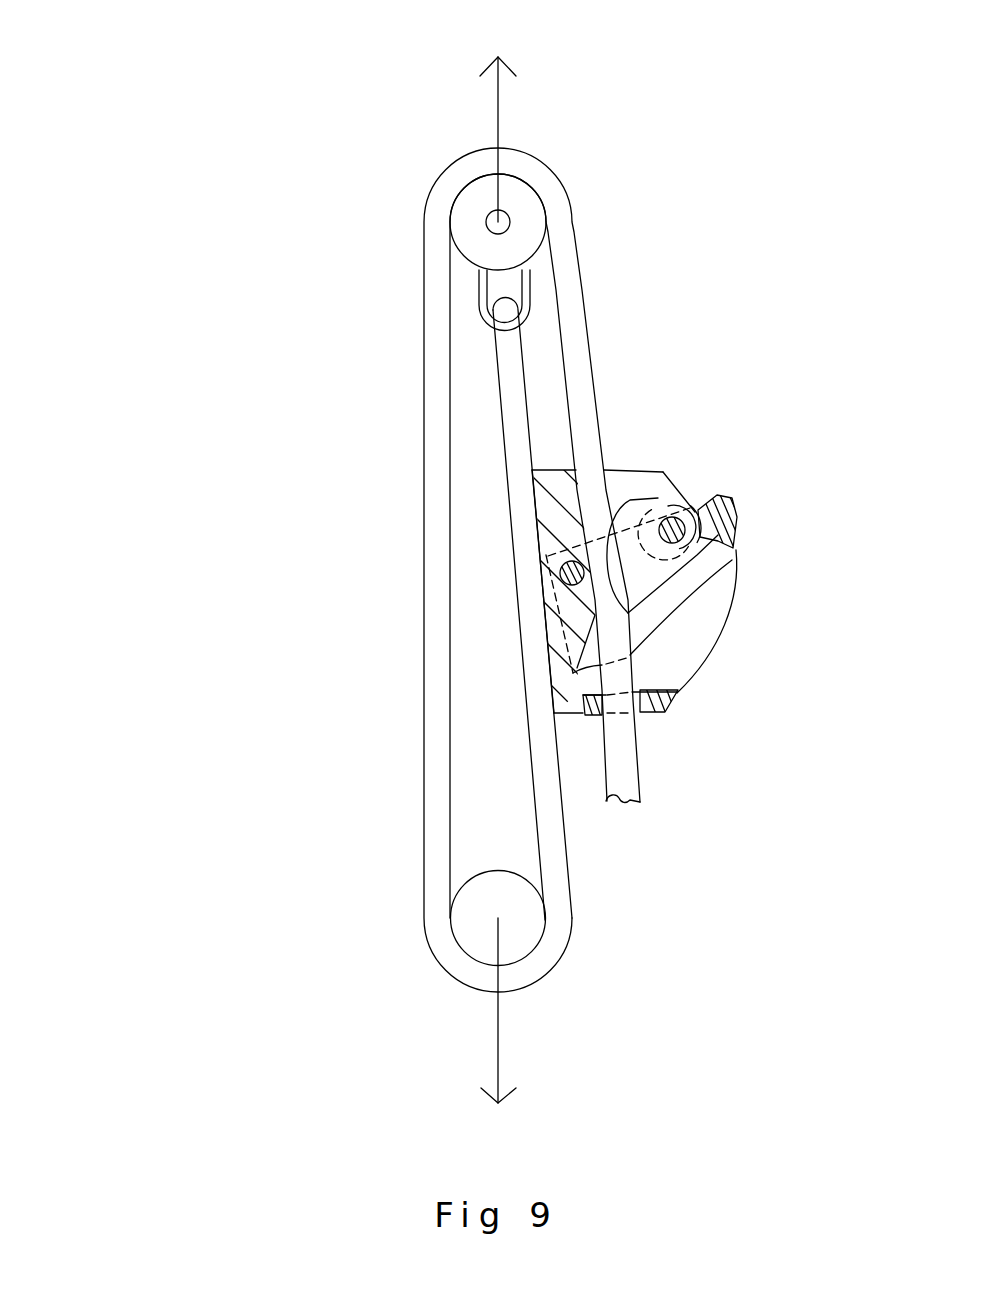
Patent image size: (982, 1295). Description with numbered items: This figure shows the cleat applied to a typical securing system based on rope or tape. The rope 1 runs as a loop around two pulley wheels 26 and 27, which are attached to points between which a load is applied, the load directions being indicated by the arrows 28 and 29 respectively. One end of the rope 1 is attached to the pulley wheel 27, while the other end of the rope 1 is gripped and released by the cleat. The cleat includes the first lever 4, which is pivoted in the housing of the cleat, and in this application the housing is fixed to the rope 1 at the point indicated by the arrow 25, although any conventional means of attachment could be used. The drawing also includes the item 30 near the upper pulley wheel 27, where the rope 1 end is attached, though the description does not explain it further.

The rope 1 is at (623, 753).
The first lever 4 is at (680, 652).
The arrow 25 is at (520, 556).
The pulley wheel 26 is at (517, 914).
The pulley wheel 27 is at (523, 205).
The arrow 28 is at (496, 1042).
The arrow 29 is at (496, 111).
The pin / clevis 30 is at (462, 282).